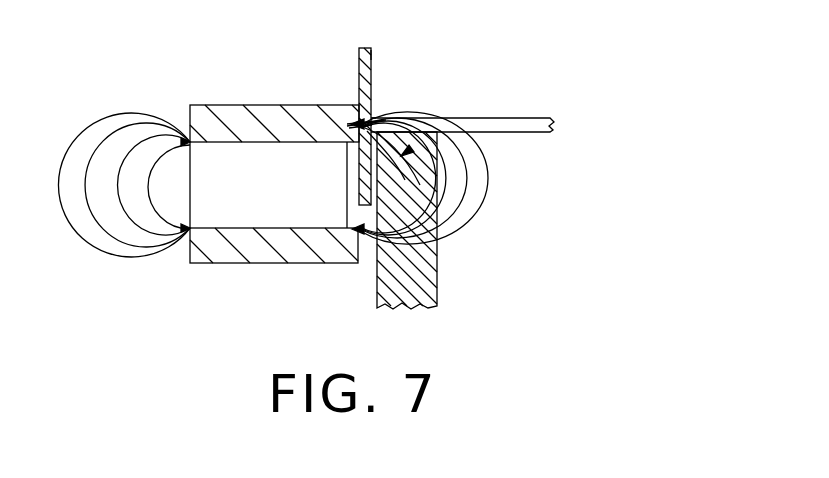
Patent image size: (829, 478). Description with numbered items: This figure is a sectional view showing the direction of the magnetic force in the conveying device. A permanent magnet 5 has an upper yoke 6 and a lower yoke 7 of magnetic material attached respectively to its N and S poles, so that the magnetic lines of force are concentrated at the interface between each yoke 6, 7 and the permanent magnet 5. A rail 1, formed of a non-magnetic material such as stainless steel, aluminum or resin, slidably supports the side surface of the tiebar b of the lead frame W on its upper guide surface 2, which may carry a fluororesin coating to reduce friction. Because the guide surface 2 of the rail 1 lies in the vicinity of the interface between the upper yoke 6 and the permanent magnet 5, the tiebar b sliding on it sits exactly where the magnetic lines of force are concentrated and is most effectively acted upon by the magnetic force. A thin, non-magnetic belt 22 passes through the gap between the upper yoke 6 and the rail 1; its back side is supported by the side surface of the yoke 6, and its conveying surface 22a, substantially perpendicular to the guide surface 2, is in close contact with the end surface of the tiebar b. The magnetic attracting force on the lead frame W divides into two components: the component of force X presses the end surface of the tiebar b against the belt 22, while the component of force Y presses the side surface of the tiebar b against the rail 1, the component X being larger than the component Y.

The rail 1 is at (431, 282).
The guide surface 2 is at (440, 118).
The permanent magnet 5 is at (230, 215).
The yoke 6 is at (243, 118).
The yoke 7 is at (293, 253).
The belt 22 is at (355, 58).
The conveying surface 22a is at (372, 57).
The lead frame W is at (535, 118).
The component of force X is at (382, 118).
The component of force Y is at (452, 166).
The tiebar b is at (416, 120).